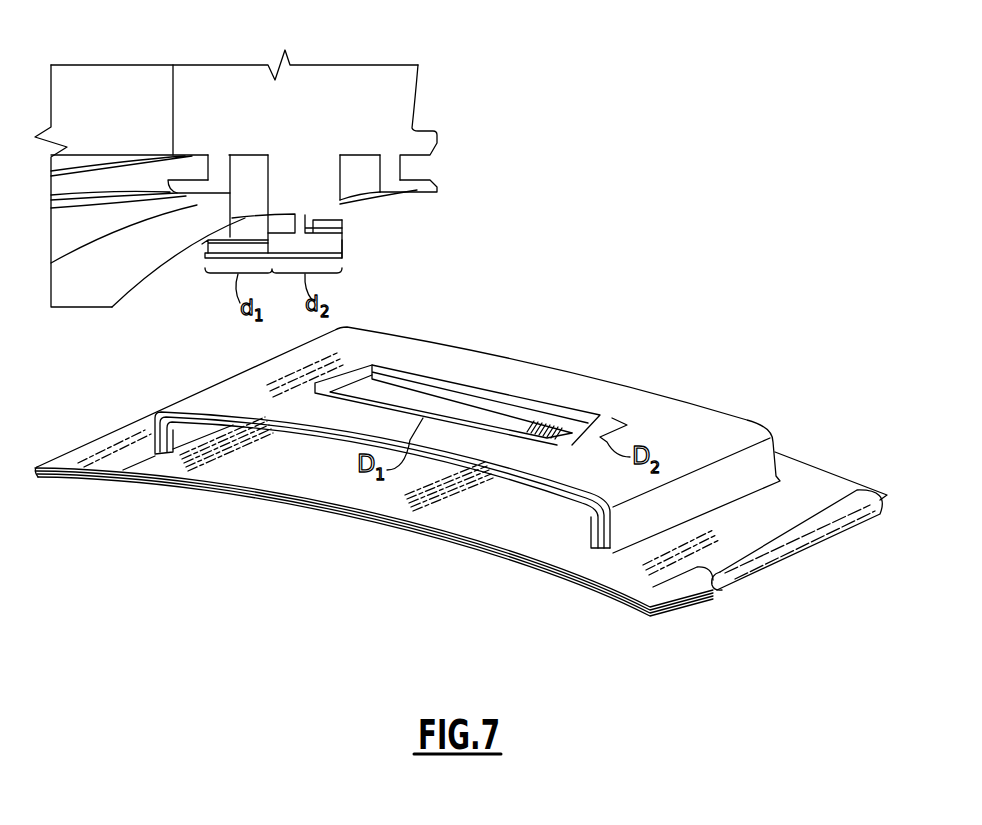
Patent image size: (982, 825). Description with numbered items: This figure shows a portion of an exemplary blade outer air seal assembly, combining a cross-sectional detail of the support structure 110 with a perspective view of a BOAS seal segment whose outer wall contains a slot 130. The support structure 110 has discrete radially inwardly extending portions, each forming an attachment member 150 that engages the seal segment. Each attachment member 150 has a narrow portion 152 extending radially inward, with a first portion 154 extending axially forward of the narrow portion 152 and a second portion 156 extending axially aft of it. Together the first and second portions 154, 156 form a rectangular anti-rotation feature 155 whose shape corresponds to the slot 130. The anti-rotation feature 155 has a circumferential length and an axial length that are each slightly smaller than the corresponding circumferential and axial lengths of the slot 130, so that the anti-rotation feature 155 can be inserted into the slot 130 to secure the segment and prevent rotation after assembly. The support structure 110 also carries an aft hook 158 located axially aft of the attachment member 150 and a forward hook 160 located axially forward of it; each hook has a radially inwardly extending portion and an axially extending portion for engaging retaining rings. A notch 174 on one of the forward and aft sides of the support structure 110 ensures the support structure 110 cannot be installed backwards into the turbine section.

The support structure 110 is at (247, 92).
The slot 130 is at (517, 423).
The attachment member 150 is at (302, 190).
The narrow portion 152 is at (340, 236).
The first portion 154 is at (207, 241).
The anti-rotation feature 155 is at (347, 268).
The second portion 156 is at (348, 258).
The aft hook 158 is at (417, 192).
The forward hook 160 is at (183, 183).
The notch 174 is at (430, 131).